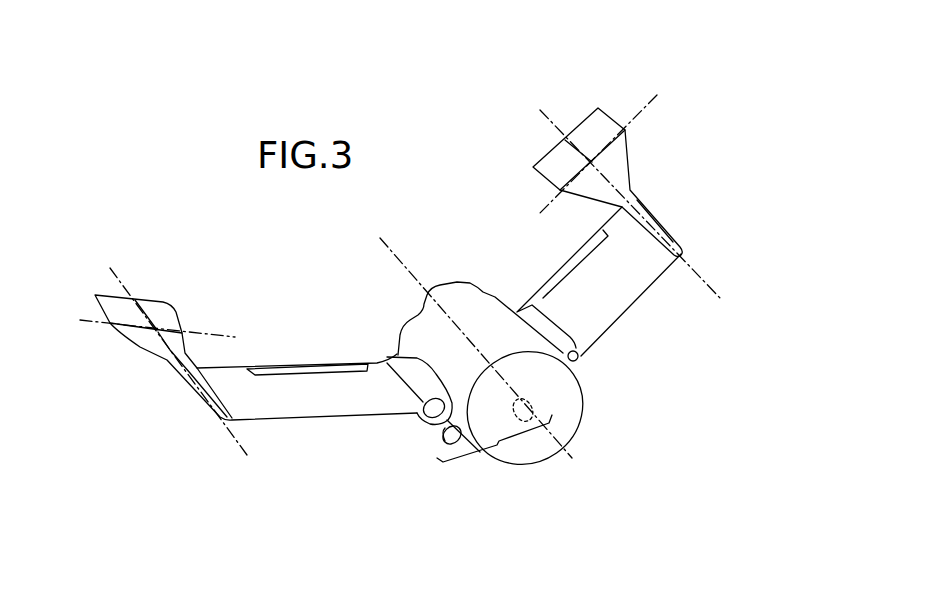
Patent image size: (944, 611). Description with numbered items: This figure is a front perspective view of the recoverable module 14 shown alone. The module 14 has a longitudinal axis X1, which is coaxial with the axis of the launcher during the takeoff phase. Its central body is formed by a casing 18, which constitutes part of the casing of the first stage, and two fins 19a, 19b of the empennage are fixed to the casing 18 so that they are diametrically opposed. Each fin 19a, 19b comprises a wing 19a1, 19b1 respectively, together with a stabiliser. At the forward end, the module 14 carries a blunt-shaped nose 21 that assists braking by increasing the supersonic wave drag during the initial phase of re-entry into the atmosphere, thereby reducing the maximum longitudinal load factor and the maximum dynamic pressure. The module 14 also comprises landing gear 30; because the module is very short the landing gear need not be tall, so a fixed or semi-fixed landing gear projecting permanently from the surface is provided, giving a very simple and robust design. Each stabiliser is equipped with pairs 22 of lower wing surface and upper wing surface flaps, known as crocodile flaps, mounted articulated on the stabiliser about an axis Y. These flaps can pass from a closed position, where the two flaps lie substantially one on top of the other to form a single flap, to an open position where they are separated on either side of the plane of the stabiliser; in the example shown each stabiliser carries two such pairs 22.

The recoverable module 14 is at (675, 356).
The casing 18 is at (468, 302).
The fin 19a is at (676, 208).
The wing 19a1 is at (652, 265).
The fin 19b is at (170, 410).
The wing 19b1 is at (297, 400).
The blunt-shaped nose 21 is at (573, 388).
The pair of lower wing surface and upper wing surface flaps 22 is at (98, 283).
The landing gear 30 is at (507, 460).
The longitudinal axis X1 is at (565, 443).
The axis Y is at (647, 108).